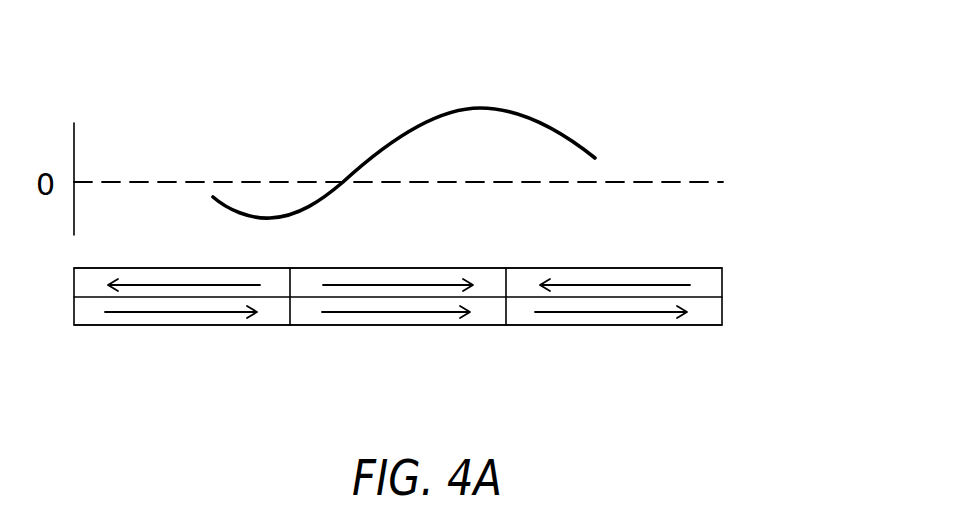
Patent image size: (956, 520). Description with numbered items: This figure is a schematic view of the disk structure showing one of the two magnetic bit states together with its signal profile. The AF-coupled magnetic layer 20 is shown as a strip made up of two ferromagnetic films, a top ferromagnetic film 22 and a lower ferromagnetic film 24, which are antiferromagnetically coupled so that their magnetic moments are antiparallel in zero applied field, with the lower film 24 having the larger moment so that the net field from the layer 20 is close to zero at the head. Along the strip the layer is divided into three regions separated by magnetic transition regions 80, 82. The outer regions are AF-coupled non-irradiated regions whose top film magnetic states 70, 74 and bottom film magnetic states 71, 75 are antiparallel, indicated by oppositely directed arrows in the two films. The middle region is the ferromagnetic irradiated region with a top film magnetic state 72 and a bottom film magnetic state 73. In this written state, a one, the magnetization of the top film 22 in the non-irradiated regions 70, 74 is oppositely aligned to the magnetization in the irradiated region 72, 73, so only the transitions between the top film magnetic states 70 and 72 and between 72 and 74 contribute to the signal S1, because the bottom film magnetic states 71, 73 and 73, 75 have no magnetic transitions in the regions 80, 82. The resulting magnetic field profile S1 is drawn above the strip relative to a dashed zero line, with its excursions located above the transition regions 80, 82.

The AF-coupled magnetic layer 20 is at (733, 268).
The top ferromagnetic film 22 is at (720, 268).
The lower ferromagnetic film 24 is at (722, 325).
The top film magnetic state of AF-coupled non-irradiated region 70 is at (103, 268).
The bottom film magnetic state of AF-coupled non-irradiated region 71 is at (107, 325).
The top film magnetic state of ferromagnetic irradiated region 72 is at (397, 268).
The bottom film magnetic state of ferromagnetic irradiated region 73 is at (405, 325).
The top film magnetic state of AF-coupled non-irradiated region 74 is at (595, 268).
The bottom film magnetic state of AF-coupled non-irradiated region 75 is at (602, 325).
The magnetic transition region 80 is at (290, 325).
The magnetic transition region 82 is at (510, 325).
The signal S1 is at (512, 110).